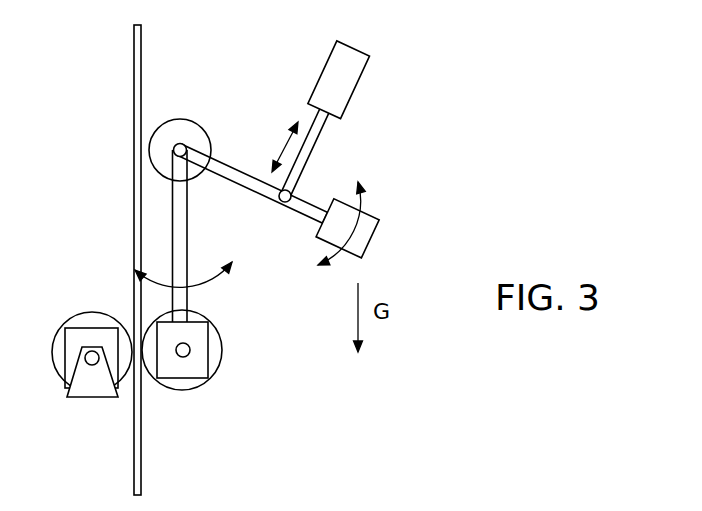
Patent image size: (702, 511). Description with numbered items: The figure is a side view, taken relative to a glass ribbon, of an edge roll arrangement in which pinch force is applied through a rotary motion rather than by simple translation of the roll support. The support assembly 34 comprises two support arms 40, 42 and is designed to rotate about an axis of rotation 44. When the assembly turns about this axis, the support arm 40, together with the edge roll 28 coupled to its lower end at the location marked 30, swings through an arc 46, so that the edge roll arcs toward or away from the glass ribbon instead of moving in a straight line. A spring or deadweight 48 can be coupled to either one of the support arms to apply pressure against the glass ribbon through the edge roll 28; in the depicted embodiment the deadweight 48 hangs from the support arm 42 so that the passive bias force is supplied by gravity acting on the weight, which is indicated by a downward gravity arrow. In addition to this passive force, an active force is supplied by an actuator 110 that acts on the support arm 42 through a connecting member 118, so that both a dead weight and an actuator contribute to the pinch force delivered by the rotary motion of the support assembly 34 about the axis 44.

The edge roll 28 is at (52, 367).
The pivot pin 30 is at (190, 347).
The support assembly 34 is at (163, 228).
The support arm 40 is at (189, 249).
The support arm 42 is at (287, 209).
The axis of rotation 44 is at (178, 144).
The arc 46 is at (209, 282).
The deadweight 48 is at (370, 243).
The actuator 110 is at (322, 69).
The actuator rod 118 is at (317, 137).